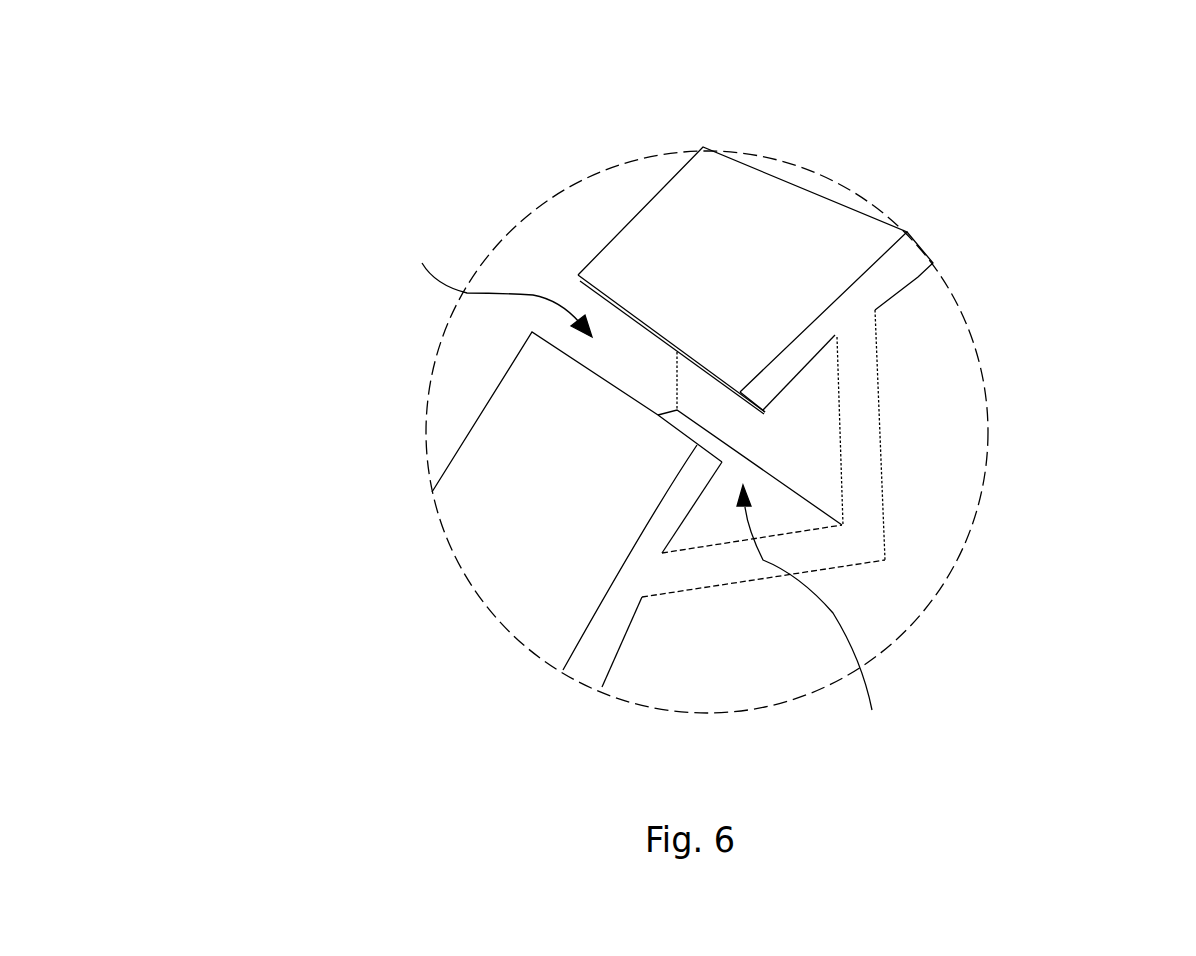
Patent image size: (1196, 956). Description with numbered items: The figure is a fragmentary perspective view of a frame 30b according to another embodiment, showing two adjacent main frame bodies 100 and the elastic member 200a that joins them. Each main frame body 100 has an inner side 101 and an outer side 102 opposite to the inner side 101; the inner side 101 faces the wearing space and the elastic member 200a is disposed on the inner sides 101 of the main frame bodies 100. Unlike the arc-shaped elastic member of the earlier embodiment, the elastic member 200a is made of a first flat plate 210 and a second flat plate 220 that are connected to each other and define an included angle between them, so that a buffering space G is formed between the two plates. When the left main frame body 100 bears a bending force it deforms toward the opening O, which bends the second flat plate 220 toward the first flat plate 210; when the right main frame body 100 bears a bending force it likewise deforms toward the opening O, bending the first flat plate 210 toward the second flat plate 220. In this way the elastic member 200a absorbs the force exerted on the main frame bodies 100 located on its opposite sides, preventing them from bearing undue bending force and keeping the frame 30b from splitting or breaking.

The frame 30b is at (222, 62).
The main frame body 100 is at (890, 247).
The inner side 101 is at (918, 277).
The outer side 102 is at (793, 210).
The elastic member 200a is at (907, 453).
The first flat plate 210 is at (863, 483).
The second flat plate 220 is at (822, 553).
The opening O is at (496, 290).
The buffering space G is at (811, 615).